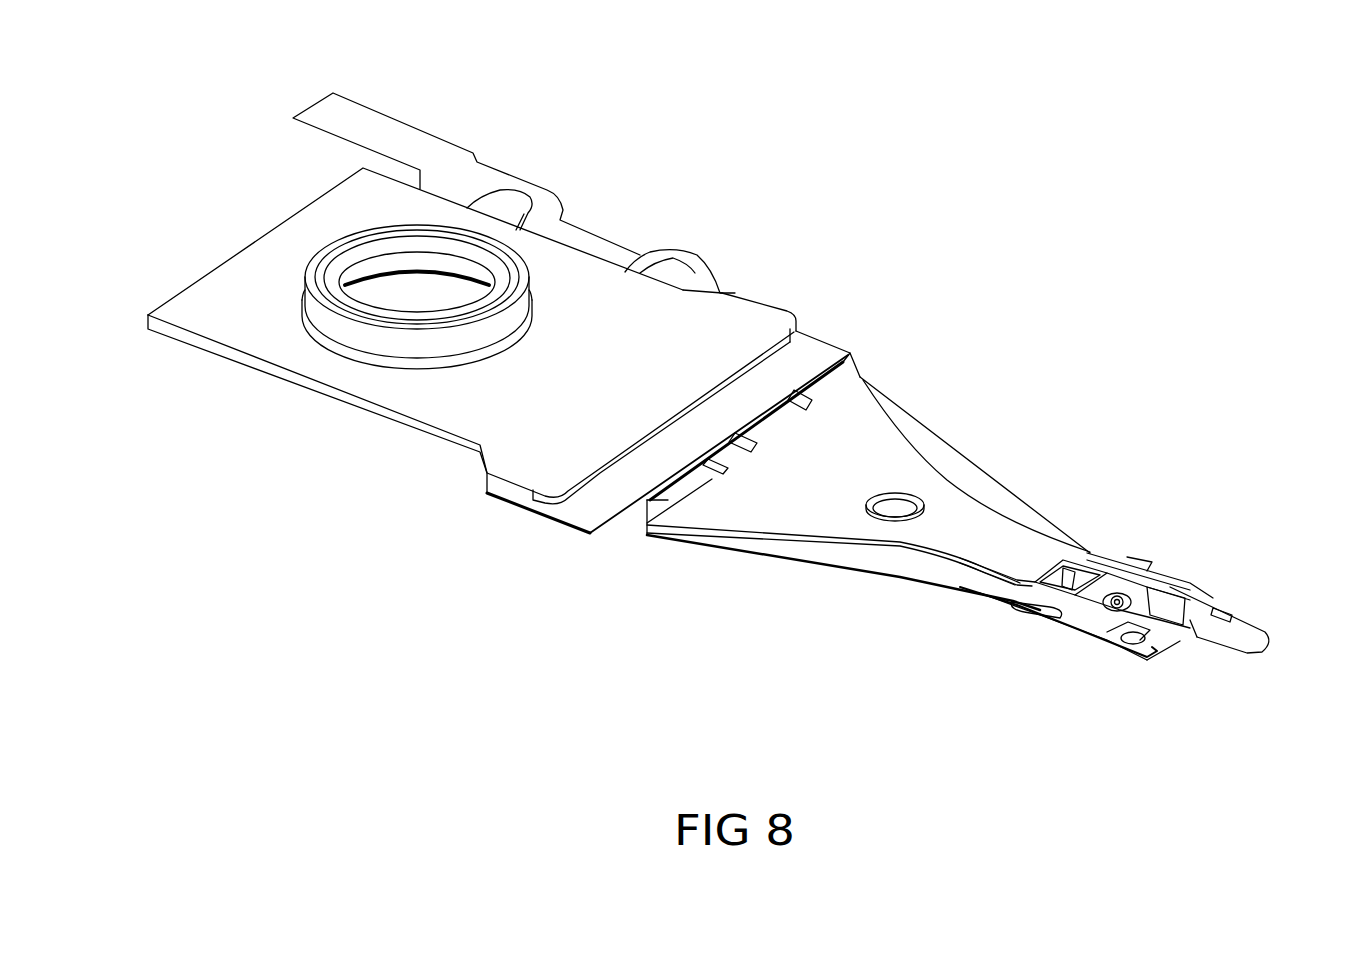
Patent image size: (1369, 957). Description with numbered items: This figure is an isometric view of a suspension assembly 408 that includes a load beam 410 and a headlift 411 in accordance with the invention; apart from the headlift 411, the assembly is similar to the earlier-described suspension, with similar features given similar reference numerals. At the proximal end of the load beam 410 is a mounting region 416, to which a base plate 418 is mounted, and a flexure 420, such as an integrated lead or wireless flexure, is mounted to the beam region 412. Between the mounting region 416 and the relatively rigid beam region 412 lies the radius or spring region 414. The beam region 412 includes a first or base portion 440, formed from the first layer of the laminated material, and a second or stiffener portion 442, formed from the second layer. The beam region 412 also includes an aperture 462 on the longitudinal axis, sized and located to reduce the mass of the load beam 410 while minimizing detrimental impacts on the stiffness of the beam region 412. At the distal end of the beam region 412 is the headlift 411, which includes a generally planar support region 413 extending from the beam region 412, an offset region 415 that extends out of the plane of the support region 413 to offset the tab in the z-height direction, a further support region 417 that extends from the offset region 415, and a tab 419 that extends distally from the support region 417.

The suspension assembly 408 is at (317, 450).
The base plate 418 is at (683, 331).
The mounting region 416 is at (637, 520).
The spring region 414 is at (840, 377).
The base portion 440 is at (913, 437).
The beam region 412 is at (947, 483).
The stiffener portion 442 is at (848, 523).
The load beam 410 is at (703, 557).
The aperture 462 is at (891, 520).
The flexure 420 is at (1067, 542).
The support region 413 is at (1095, 562).
The offset region 415 is at (1127, 557).
The support region 417 is at (1205, 594).
The tab 419 is at (1248, 637).
The headlift 411 is at (1223, 652).